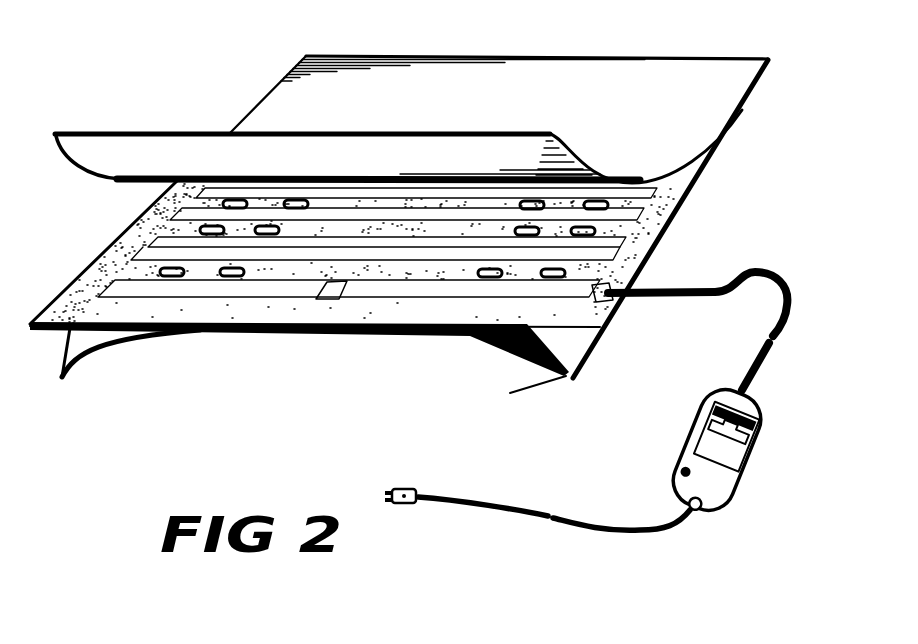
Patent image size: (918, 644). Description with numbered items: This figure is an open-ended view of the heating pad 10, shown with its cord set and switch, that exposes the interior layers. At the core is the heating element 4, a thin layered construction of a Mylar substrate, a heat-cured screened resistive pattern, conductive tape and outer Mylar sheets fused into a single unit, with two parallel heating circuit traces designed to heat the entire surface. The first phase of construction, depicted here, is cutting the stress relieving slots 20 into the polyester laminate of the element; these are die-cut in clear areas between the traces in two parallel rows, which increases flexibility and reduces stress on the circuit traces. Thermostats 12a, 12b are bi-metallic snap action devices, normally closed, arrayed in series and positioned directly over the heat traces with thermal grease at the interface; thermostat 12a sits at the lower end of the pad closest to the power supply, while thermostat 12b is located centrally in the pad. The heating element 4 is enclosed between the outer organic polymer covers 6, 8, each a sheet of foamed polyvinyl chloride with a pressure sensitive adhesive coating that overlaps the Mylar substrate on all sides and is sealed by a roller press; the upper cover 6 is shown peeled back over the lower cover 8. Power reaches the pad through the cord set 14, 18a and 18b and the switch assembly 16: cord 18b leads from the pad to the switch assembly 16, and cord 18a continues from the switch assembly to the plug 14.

The heating pad 10 is at (210, 77).
The outer organic polymer cover 6 is at (188, 150).
The outer organic polymer cover 8 is at (553, 368).
The heating element 4 is at (392, 315).
The stress relieving slots 20 is at (300, 198).
The thermostat 12a is at (615, 297).
The thermostat 12b is at (322, 300).
The cord set 18b is at (745, 270).
The switch assembly 16 is at (750, 477).
The cord set 18a is at (597, 520).
The cord set 14 is at (405, 487).